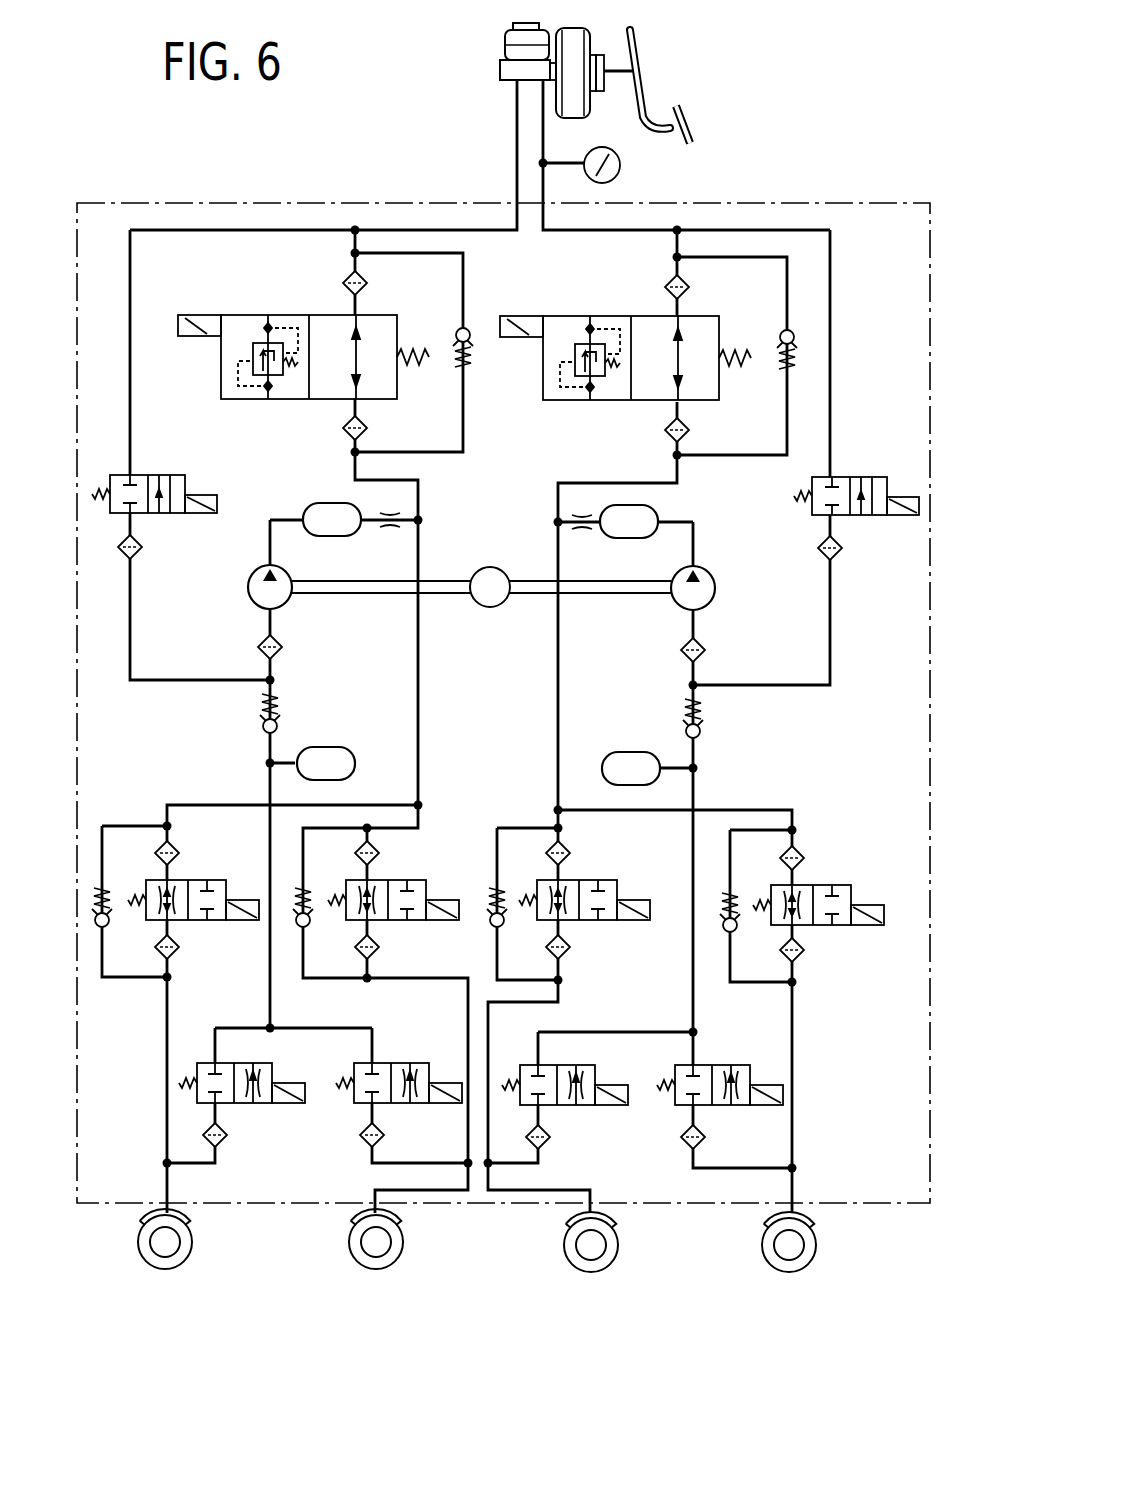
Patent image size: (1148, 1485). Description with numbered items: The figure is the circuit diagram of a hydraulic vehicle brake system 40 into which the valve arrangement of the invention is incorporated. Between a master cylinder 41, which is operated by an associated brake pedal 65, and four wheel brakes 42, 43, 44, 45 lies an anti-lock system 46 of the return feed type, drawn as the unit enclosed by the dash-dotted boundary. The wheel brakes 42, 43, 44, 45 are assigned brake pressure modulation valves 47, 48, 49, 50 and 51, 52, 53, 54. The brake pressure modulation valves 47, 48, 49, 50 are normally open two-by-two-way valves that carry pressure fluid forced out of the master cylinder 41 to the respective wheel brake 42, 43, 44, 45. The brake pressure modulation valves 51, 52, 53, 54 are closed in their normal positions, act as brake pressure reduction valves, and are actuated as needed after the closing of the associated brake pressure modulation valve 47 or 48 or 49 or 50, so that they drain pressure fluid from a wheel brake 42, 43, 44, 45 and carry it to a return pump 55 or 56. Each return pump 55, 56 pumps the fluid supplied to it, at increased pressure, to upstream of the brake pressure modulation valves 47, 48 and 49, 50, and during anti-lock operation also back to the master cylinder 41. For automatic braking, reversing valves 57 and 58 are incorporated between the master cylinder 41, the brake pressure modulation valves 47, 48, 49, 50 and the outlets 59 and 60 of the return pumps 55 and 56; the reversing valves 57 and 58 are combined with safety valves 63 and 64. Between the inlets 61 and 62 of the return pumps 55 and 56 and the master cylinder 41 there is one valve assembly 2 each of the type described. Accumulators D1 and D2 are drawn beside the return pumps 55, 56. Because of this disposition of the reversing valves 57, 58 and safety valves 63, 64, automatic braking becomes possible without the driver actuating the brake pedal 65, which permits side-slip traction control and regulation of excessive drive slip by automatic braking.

The hydraulic vehicle brake system 40 is at (775, 68).
The master cylinder 41 is at (503, 67).
The brake pedal 65 is at (688, 116).
The anti-lock system 46 is at (385, 200).
The valve assembly 2 is at (141, 487).
The reversing valve 57 is at (648, 325).
The reversing valve 58 is at (327, 328).
The safety valve 63 is at (580, 377).
The safety valve 64 is at (261, 378).
The outlet 59 is at (701, 567).
The outlet 60 is at (270, 566).
The return pump 55 is at (703, 598).
The return pump 56 is at (285, 597).
The inlet 61 is at (690, 610).
The inlet 62 is at (268, 610).
The accumulator D1 is at (629, 538).
The accumulator D2 is at (332, 537).
The brake pressure modulation valve 47 is at (815, 923).
The brake pressure modulation valve 48 is at (585, 916).
The brake pressure modulation valve 49 is at (181, 912).
The brake pressure modulation valve 50 is at (388, 892).
The brake pressure modulation valve 51 is at (705, 1071).
The brake pressure modulation valve 52 is at (553, 1104).
The brake pressure modulation valve 53 is at (232, 1103).
The brake pressure modulation valve 54 is at (383, 1066).
The wheel brake 42 is at (803, 1263).
The wheel brake 43 is at (608, 1263).
The wheel brake 44 is at (176, 1259).
The wheel brake 45 is at (392, 1259).